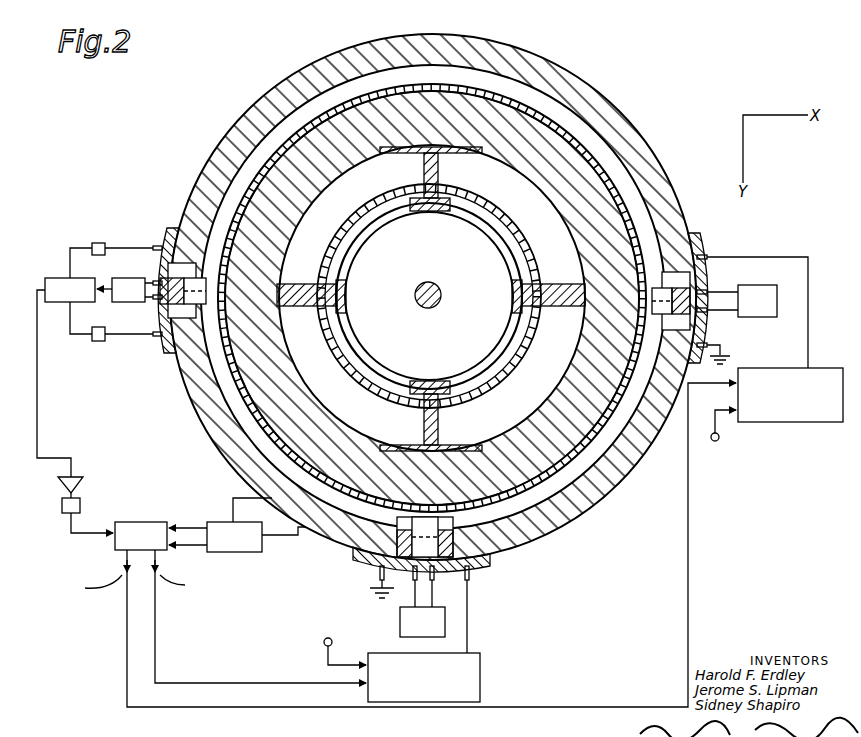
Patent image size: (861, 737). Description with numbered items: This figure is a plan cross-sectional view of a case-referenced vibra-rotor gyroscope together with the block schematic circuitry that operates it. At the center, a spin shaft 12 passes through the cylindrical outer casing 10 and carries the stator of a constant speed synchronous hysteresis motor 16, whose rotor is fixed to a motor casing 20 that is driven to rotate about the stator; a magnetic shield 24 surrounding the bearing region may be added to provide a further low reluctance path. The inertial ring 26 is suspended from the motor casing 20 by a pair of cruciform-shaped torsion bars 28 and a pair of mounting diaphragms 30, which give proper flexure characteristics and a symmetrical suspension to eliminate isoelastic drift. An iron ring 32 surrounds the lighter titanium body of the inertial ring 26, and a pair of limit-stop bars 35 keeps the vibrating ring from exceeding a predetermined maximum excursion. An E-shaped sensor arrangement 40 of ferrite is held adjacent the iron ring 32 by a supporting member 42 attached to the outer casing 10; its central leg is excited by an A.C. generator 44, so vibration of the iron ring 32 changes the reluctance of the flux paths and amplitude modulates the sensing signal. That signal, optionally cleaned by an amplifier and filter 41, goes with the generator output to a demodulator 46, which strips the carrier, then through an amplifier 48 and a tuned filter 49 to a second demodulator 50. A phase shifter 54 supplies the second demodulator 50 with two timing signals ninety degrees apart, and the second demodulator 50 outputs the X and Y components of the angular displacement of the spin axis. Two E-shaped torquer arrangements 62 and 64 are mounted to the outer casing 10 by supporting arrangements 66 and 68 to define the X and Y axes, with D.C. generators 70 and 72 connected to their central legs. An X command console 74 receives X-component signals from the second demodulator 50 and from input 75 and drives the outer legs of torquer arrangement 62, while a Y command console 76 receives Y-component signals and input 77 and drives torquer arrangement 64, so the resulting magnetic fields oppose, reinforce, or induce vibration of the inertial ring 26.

The outer casing 10 is at (546, 66).
The spin shaft 12 is at (441, 295).
The synchronous hysteresis motor 16 is at (429, 296).
The motor casing 20 is at (378, 372).
The magnetic shield 24 is at (368, 200).
The inertial ring 26 is at (311, 197).
The torsion bars 28 is at (439, 178).
The mounting diaphragms 30 is at (470, 153).
The iron ring 32 is at (372, 92).
The limit-stop bars 35 is at (297, 307).
The E-shaped sensor arrangement 40 is at (196, 305).
The amplifier and filter 41 is at (98, 243).
The supporting member 42 is at (168, 352).
The A.C. generator 44 is at (135, 266).
The demodulator 46 is at (55, 278).
The amplifier 48 is at (83, 482).
The filter 49 is at (80, 505).
The second demodulator 50 is at (147, 522).
The phase shifter 54 is at (262, 552).
The torquer arrangement 62 is at (651, 292).
The torquer arrangement 64 is at (452, 526).
The supporting arrangement 66 is at (697, 240).
The supporting arrangement 68 is at (490, 564).
The D.C. generator 70 is at (765, 285).
The D.C. generator 72 is at (445, 620).
The X command console 74 is at (840, 362).
The input 75 is at (720, 438).
The Y command console 76 is at (480, 668).
The input 77 is at (345, 626).